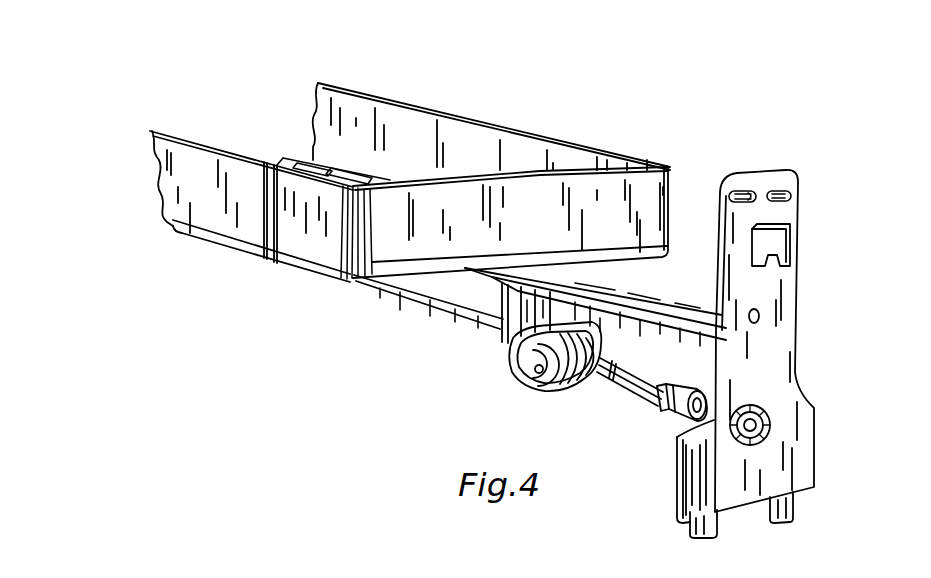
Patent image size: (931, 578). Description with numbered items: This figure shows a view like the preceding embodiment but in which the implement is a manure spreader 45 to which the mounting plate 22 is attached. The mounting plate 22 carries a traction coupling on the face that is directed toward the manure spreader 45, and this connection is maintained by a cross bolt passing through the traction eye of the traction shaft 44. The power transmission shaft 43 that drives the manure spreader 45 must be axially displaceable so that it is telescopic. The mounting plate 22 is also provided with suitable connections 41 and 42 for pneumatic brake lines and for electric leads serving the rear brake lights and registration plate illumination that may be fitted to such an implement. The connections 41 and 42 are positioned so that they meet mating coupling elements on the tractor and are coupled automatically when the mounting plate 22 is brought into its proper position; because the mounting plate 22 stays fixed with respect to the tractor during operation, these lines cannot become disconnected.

The mounting plate 22 is at (782, 362).
The connection 41 is at (745, 190).
The connection 42 is at (784, 190).
The drive shaft with universal joint 43 is at (623, 389).
The traction shaft 44 is at (543, 286).
The manure spreader 45 is at (353, 172).